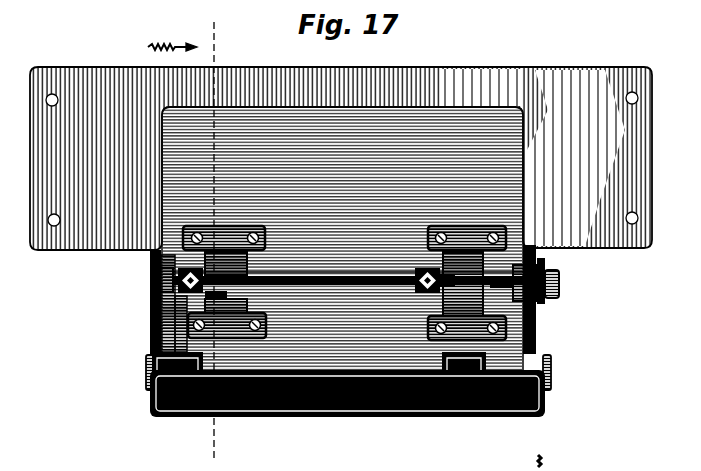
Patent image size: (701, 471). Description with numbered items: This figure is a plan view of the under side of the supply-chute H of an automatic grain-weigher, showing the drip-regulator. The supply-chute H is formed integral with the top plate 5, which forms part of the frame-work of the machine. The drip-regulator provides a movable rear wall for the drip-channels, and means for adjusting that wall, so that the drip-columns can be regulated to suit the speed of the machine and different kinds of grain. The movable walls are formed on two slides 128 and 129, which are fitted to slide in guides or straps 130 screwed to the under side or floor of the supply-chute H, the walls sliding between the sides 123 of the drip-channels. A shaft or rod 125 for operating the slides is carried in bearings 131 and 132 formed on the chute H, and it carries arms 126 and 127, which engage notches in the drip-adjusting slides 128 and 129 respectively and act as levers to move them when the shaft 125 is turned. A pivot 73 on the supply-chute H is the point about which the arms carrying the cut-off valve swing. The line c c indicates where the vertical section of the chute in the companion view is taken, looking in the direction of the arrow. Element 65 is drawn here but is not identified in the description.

The top plate 5 is at (84, 73).
The frame bar 65 is at (387, 413).
The pivot 73 is at (147, 372).
The sides of the drip-channels 123 is at (252, 356).
The shaft 125 is at (317, 284).
The arm 126 is at (413, 297).
The arm 127 is at (157, 309).
The drip-adjusting slide 128 is at (463, 284).
The drip-adjusting slide 129 is at (226, 282).
The guides or straps 130 is at (344, 283).
The bearing 131 is at (537, 297).
The bearing 132 is at (150, 283).
The supply-chute H is at (153, 328).
The section line c is at (181, 240).